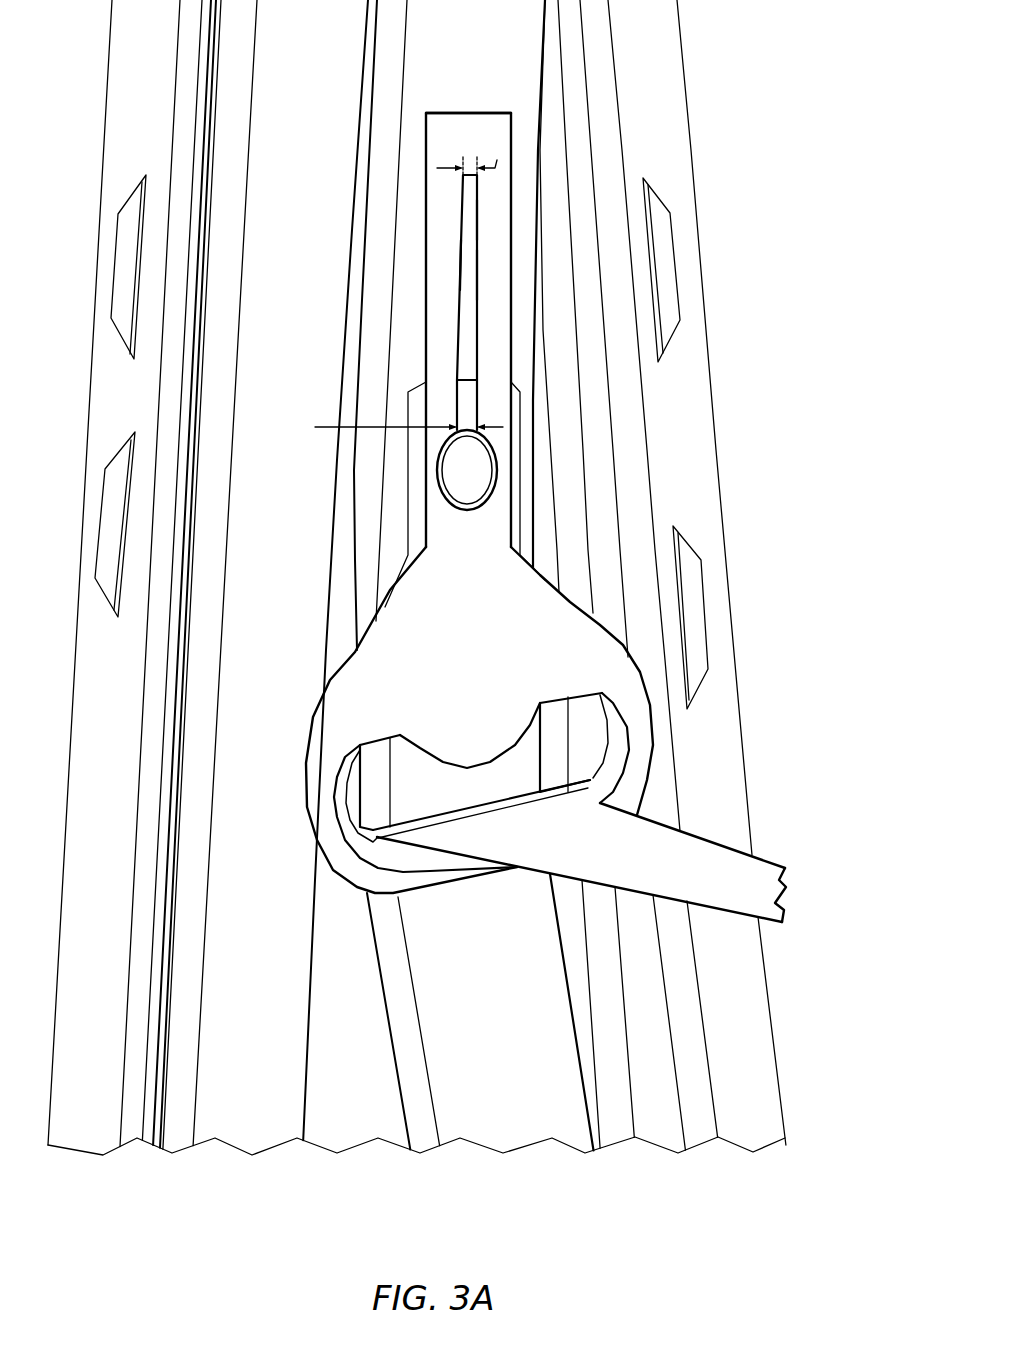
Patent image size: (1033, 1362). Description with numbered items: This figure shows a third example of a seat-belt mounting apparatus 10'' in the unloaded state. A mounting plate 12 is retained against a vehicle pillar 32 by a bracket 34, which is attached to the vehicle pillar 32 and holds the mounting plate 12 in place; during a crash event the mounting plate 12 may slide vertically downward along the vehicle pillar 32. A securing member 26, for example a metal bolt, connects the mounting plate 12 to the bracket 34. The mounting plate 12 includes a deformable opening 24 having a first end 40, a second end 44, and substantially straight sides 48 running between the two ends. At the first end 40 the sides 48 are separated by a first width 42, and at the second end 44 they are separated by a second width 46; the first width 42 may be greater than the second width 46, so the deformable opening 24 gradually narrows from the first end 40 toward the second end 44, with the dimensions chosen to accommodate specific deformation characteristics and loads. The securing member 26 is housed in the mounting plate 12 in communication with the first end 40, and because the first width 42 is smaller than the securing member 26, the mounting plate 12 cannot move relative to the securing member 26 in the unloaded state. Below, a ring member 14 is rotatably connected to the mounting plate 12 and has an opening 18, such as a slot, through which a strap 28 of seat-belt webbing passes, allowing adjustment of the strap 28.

The apparatus 10'' is at (751, 572).
The mounting plate 12 is at (486, 123).
The ring member 14 is at (457, 711).
The opening 18 is at (436, 782).
The deformable opening 24 is at (605, 161).
The securing member 26 is at (606, 433).
The strap 28 is at (598, 824).
The vehicle pillar 32 is at (489, 53).
The bracket 34 is at (582, 430).
The first end 40 is at (379, 383).
The first width 42 is at (392, 425).
The second end 44 is at (464, 160).
The second width 46 is at (475, 156).
The sides 48 is at (527, 239).